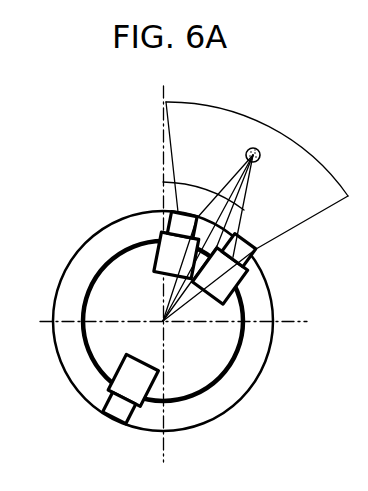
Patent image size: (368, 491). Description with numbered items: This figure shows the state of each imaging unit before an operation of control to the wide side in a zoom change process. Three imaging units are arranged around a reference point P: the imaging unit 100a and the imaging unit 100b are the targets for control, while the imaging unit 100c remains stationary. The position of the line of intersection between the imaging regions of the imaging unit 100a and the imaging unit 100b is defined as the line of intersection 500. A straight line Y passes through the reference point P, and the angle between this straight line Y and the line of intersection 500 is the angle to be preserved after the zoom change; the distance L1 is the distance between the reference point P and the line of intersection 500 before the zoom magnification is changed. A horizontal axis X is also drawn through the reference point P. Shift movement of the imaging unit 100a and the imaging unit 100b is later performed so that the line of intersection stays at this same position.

The imaging unit 100a is at (164, 222).
The imaging unit 100b is at (245, 278).
The imaging unit 100c is at (141, 409).
The line of intersection 500 is at (261, 157).
The distance L1 is at (254, 163).
The reference point P is at (165, 324).
The X axis X is at (184, 322).
The straight line Y is at (161, 263).